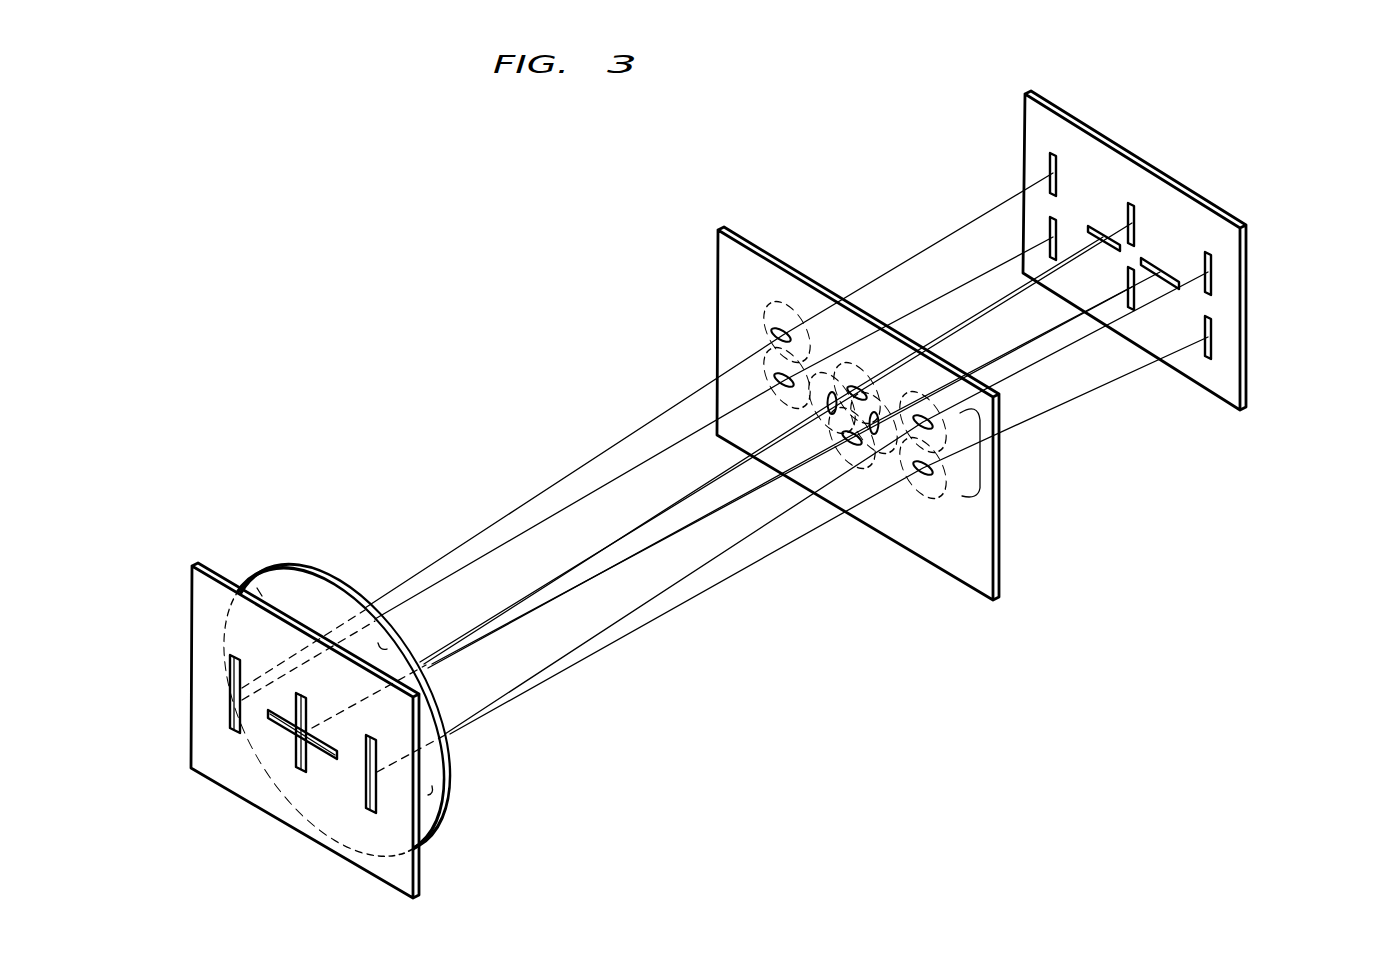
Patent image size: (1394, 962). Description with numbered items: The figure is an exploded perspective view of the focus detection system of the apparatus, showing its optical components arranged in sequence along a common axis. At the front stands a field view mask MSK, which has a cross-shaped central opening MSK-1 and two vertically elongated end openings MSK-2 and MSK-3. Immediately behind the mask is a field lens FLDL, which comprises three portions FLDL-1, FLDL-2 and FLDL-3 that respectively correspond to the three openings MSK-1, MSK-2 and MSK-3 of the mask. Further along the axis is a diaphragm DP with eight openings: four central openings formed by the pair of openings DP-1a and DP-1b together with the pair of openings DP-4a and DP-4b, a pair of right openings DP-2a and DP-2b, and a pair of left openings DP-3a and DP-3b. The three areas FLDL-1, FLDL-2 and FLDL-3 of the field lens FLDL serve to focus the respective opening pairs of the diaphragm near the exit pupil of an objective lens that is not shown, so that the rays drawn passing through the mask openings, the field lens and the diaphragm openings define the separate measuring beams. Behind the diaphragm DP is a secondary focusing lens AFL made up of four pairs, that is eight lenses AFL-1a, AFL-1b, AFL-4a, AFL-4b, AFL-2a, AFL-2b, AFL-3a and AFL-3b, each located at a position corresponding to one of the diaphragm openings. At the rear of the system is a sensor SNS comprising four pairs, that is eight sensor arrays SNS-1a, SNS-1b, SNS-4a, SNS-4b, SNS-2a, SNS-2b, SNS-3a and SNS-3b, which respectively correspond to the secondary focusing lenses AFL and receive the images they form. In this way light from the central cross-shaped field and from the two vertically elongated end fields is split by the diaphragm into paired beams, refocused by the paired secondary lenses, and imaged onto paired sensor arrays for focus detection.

The field view mask MSK is at (203, 563).
The cross-shaped central opening MSK-1 is at (293, 760).
The vertically elongated end opening MSK-2 is at (367, 802).
The vertically elongated end opening MSK-3 is at (229, 727).
The field lens FLDL is at (333, 583).
The field lens portion FLDL-1 is at (378, 643).
The field lens portion FLDL-2 is at (432, 786).
The field lens portion FLDL-3 is at (257, 588).
The diaphragm DP is at (718, 231).
The central opening DP-1a is at (852, 385).
The central opening DP-1b is at (848, 448).
The right opening DP-2a is at (960, 430).
The right opening DP-2b is at (955, 500).
The left opening DP-3a is at (772, 333).
The left opening DP-3b is at (774, 378).
The central opening DP-4a is at (874, 435).
The central opening DP-4b is at (825, 406).
The secondary focusing lens AFL is at (980, 463).
The secondary focusing lens element AFL-1a is at (870, 370).
The secondary focusing lens element AFL-1b is at (845, 470).
The secondary focusing lens element AFL-2a is at (952, 396).
The secondary focusing lens element AFL-2b is at (960, 505).
The secondary focusing lens element AFL-3a is at (770, 308).
The secondary focusing lens element AFL-3b is at (762, 388).
The secondary focusing lens element AFL-4a is at (905, 478).
The secondary focusing lens element AFL-4b is at (826, 378).
The sensor SNS is at (1058, 110).
The sensor array SNS-1a is at (1132, 205).
The sensor array SNS-1b is at (1133, 312).
The sensor array SNS-2a is at (1213, 277).
The sensor array SNS-2b is at (1213, 353).
The sensor array SNS-3a is at (1047, 172).
The sensor array SNS-3b is at (1047, 236).
The sensor array SNS-4a is at (1166, 262).
The sensor array SNS-4b is at (1090, 225).